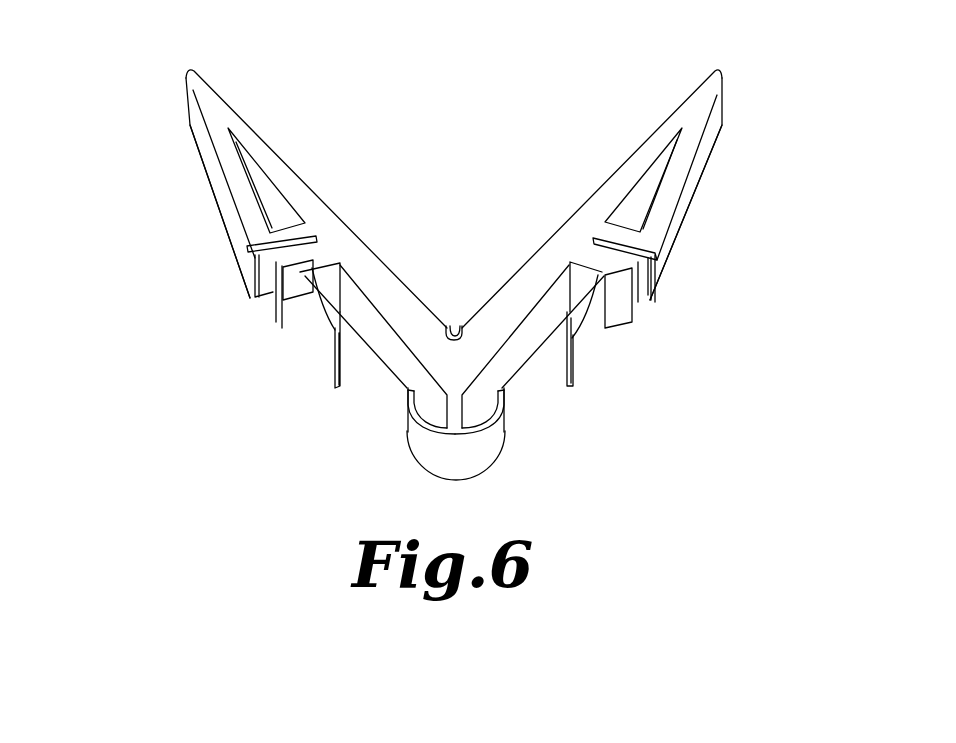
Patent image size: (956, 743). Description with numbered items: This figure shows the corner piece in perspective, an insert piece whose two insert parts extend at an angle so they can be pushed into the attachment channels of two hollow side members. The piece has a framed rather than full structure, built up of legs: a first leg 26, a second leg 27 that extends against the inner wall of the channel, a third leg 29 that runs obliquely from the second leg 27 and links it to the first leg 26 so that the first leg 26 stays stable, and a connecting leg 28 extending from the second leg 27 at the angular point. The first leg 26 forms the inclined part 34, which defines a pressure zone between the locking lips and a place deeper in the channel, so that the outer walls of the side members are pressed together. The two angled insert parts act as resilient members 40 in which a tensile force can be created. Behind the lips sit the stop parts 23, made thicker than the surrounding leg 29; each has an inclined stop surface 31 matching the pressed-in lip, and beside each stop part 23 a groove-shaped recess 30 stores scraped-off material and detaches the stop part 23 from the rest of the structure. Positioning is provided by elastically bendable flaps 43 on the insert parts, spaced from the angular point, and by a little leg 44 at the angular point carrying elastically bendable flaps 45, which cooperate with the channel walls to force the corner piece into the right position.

The stop part 23 is at (260, 316).
The first leg 26 is at (224, 160).
The second leg 27 is at (240, 128).
The connecting leg 28 is at (490, 314).
The third leg 29 is at (262, 242).
The recess 30 is at (314, 240).
The stop surface 31 is at (276, 312).
The inclined part 34 is at (228, 215).
The resilient member 40 is at (578, 193).
The elastically bendable flap 43 is at (328, 354).
The little leg 44 is at (458, 412).
The elastically bendable flap 45 is at (420, 418).